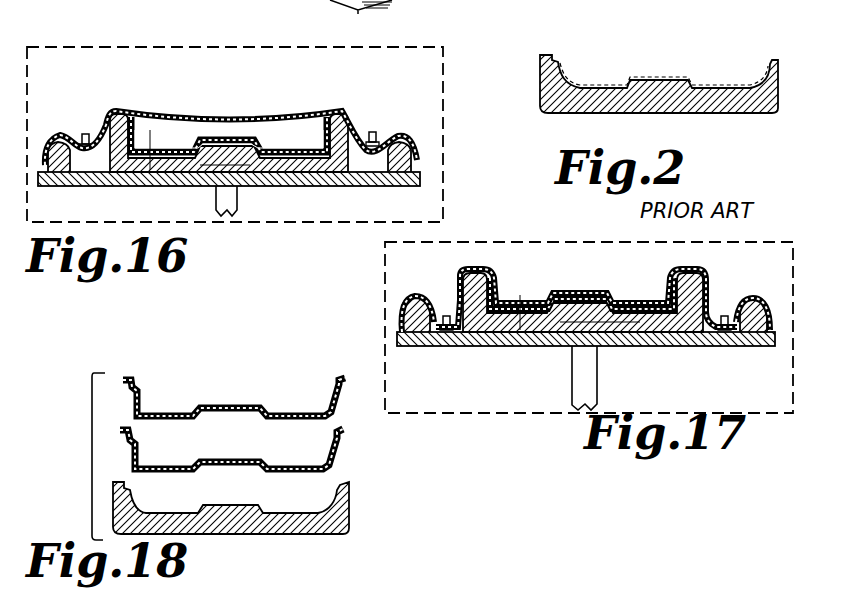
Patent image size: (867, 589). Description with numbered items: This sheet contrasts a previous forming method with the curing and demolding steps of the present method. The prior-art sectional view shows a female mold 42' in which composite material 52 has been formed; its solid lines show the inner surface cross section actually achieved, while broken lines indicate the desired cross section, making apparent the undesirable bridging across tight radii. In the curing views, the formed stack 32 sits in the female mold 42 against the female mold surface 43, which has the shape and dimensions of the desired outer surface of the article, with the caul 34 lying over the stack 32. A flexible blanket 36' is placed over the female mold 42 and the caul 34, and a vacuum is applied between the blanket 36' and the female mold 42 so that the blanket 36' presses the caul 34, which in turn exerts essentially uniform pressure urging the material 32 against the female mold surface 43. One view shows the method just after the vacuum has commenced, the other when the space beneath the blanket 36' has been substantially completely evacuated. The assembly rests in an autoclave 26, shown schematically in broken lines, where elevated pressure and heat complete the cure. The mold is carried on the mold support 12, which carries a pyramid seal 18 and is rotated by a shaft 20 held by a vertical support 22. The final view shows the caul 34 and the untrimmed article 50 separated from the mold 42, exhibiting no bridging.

In FIG. 16, the mold support 12 is at (100, 186).
In FIG. 17, the mold support 12 is at (445, 346).
In FIG. 16, the pyramid seal 18 is at (400, 162).
In FIG. 17, the pyramid seal 18 is at (766, 320).
In FIG. 16, the shaft 20 is at (245, 186).
In FIG. 17, the shaft 20 is at (598, 346).
In FIG. 16, the vertical support 22 is at (237, 205).
In FIG. 17, the vertical support 22 is at (572, 392).
In FIG. 16, the autoclave 26 is at (285, 47).
In FIG. 17, the autoclave 26 is at (520, 413).
In FIG. 16, the formed stack 32 is at (163, 145).
In FIG. 17, the formed stack 32 is at (530, 315).
In FIG. 16, the caul 34 is at (176, 140).
In FIG. 17, the caul 34 is at (522, 302).
In FIG. 18, the caul 34 is at (166, 412).
In FIG. 16, the flexible blanket 36' is at (231, 109).
In FIG. 17, the flexible blanket 36' is at (593, 289).
In FIG. 16, the female mold 42 is at (251, 166).
In FIG. 17, the female mold 42 is at (583, 332).
In FIG. 18, the female mold 42 is at (274, 508).
In FIG. 2, the female mold 42' is at (655, 59).
In FIG. 18, the female mold surface 43 is at (275, 512).
In FIG. 18, the untrimmed article 50 is at (340, 451).
In FIG. 2, the composite material 52 is at (600, 84).